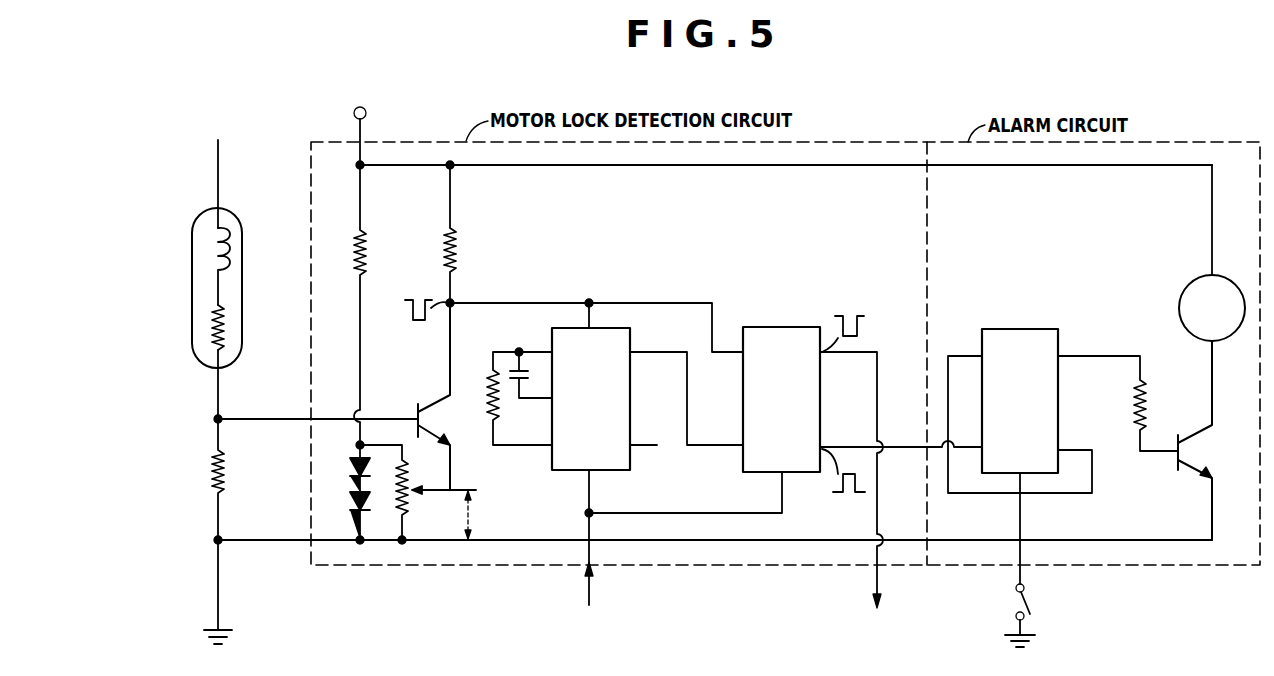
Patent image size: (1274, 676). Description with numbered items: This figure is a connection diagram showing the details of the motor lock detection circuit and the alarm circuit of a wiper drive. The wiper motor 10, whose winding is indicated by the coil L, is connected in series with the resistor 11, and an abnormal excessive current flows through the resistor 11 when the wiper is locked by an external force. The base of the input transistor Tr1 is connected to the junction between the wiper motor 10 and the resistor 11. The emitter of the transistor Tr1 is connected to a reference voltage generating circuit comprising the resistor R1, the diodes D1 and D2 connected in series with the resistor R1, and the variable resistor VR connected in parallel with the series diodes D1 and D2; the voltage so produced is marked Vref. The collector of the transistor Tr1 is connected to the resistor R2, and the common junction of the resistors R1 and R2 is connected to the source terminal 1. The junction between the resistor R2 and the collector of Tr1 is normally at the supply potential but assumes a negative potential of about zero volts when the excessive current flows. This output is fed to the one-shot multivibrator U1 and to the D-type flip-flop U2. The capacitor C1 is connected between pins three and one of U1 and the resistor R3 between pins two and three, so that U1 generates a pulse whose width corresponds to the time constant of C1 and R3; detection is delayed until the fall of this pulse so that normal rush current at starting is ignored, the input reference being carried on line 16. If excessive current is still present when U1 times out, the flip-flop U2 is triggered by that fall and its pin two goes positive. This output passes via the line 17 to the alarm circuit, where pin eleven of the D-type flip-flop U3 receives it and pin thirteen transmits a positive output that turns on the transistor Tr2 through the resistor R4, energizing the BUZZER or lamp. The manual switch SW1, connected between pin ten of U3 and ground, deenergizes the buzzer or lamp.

The source terminal 1 is at (370, 134).
The wiper motor 10 is at (192, 322).
The resistor 11 is at (212, 470).
The signal line to reference input 16 is at (588, 552).
The line 17 is at (874, 588).
The motor coil L is at (210, 252).
The resistor R1 is at (374, 305).
The resistor R2 is at (464, 234).
The resistor R3 is at (510, 398).
The resistor R4 is at (1118, 403).
The diode D1 is at (348, 468).
The diode D2 is at (348, 516).
The variable resistor VR is at (405, 494).
The reference voltage Vref is at (487, 514).
The input transistor Tr1 is at (428, 396).
The transistor Tr2 is at (1205, 440).
The capacitor C1 is at (532, 373).
The one-shot multivibrator U1 is at (592, 400).
The D-type flip-flop U2 is at (781, 400).
The D-type flip-flop U3 is at (1021, 402).
The buzzer or lamp BUZZER is at (1185, 289).
The manual switch SW1 is at (1041, 560).